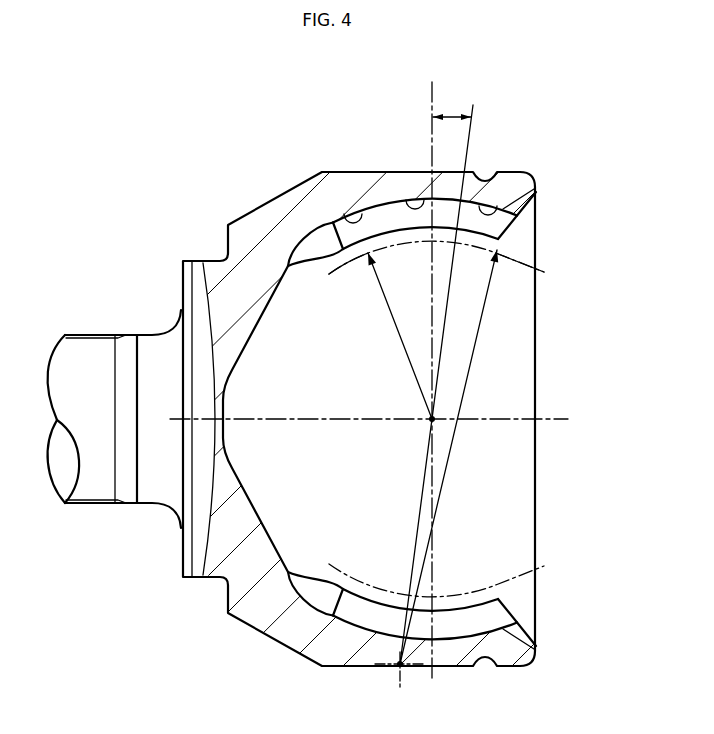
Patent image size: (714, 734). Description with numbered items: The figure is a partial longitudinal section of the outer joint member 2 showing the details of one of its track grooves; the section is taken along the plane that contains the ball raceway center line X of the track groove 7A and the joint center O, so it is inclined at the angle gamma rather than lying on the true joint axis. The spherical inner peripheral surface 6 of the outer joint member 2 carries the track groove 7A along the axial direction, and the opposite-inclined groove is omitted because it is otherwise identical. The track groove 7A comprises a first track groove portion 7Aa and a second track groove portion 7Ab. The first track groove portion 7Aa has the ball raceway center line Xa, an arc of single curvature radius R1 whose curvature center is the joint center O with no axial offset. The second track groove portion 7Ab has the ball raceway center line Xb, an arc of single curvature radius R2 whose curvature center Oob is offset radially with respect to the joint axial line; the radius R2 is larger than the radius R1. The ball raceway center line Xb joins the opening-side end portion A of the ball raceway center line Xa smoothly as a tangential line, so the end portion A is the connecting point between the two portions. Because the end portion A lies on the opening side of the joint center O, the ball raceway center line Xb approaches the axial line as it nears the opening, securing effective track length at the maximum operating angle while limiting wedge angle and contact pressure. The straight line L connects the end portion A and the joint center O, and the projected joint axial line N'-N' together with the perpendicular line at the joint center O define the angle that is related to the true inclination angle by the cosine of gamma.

The outer joint member 2 is at (362, 172).
The spherical inner peripheral surface 6 is at (463, 605).
The track groove 7A is at (406, 200).
The first track groove portion 7Aa is at (344, 214).
The second track groove portion 7Ab is at (480, 206).
The joint axial line N'- N' is at (366, 420).
The joint center O is at (421, 433).
The curvature center Oob is at (397, 666).
The straight line L is at (447, 324).
The ball raceway center line X is at (403, 248).
The ball raceway center line of first track groove portion Xa is at (347, 262).
The ball raceway center line of second track groove portion Xb is at (514, 256).
The curvature radius R1 is at (396, 345).
The curvature radius R2 is at (454, 446).
The end portion A is at (461, 247).